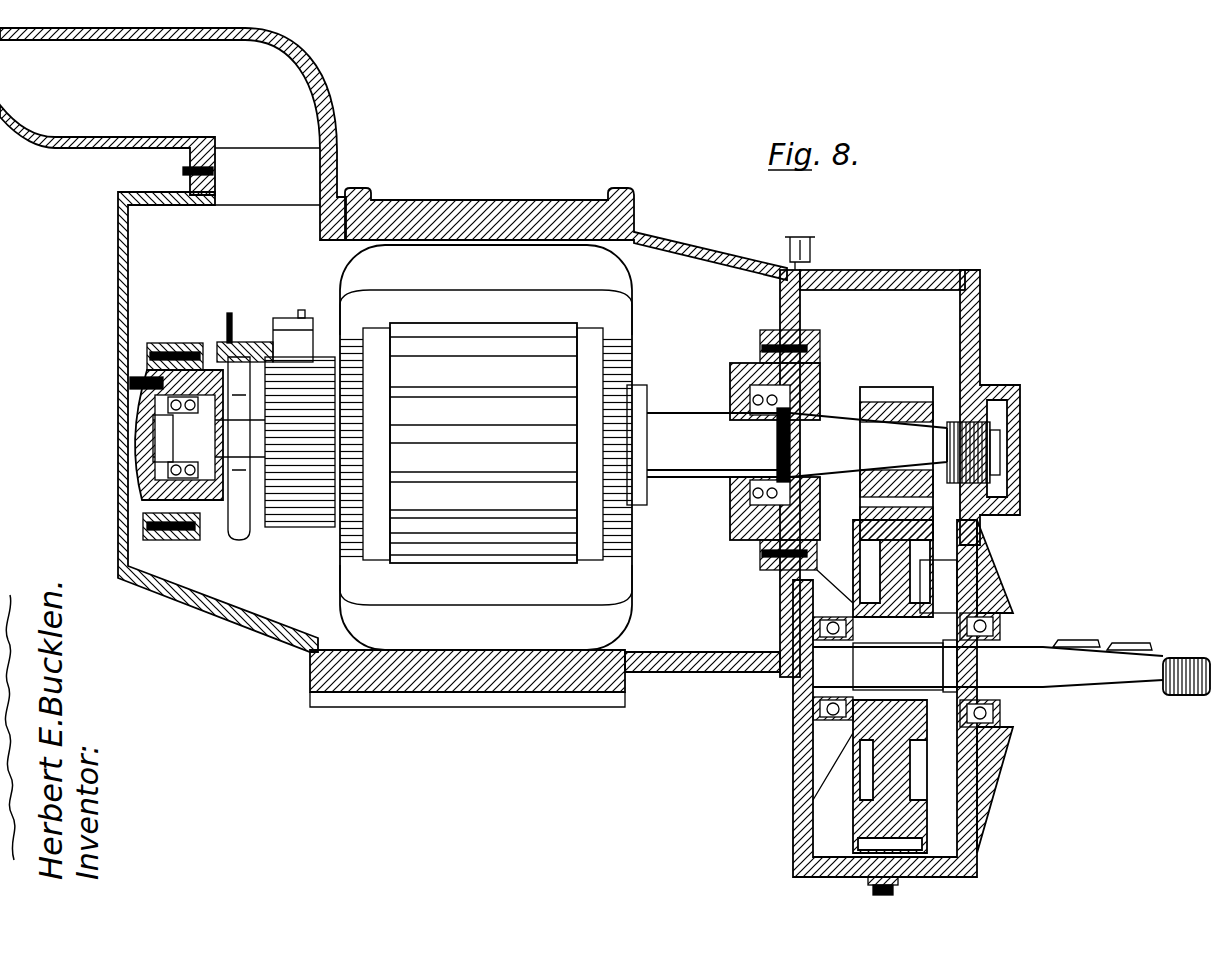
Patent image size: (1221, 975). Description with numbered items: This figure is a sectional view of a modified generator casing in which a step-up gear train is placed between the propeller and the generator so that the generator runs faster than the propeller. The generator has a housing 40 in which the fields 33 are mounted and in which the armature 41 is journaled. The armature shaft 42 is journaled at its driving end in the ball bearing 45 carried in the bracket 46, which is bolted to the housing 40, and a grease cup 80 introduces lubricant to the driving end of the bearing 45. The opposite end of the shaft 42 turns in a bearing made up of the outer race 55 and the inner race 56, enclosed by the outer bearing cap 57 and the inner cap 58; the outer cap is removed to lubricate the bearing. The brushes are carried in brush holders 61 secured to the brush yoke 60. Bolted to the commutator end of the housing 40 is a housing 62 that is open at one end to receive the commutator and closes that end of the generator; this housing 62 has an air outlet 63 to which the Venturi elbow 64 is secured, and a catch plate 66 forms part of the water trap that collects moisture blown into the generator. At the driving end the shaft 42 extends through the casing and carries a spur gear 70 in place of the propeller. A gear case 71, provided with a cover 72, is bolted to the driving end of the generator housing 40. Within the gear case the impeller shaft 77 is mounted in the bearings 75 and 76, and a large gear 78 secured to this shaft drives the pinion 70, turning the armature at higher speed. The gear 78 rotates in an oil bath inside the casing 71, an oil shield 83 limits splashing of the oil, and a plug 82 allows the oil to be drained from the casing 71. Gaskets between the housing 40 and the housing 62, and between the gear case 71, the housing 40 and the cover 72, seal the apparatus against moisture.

The fields 33 is at (471, 476).
The housing 40 is at (566, 222).
The armature 41 is at (514, 437).
The armature shaft 42 is at (813, 420).
The ball bearing 45 is at (752, 375).
The bracket 46 is at (752, 527).
The outer race 55 is at (244, 442).
The inner race 56 is at (136, 514).
The outer bearing cap 57 is at (143, 421).
The inner cap 58 is at (232, 332).
The brush yoke 60 is at (255, 409).
The brush holders 61 is at (301, 309).
The housing 62 is at (190, 422).
The air outlet 63 is at (161, 155).
The Venturi elbow 64 is at (197, 134).
The catch plate 66 is at (702, 689).
The spur gear 70 is at (896, 443).
The gear case 71 is at (872, 458).
The cover 72 is at (996, 407).
The bearing 75 is at (875, 698).
The bearing 76 is at (1030, 685).
The impeller shaft 77 is at (1011, 694).
The large gear 78 is at (943, 779).
The grease cup 80 is at (828, 249).
The plug 82 is at (906, 891).
The oil shield 83 is at (995, 581).